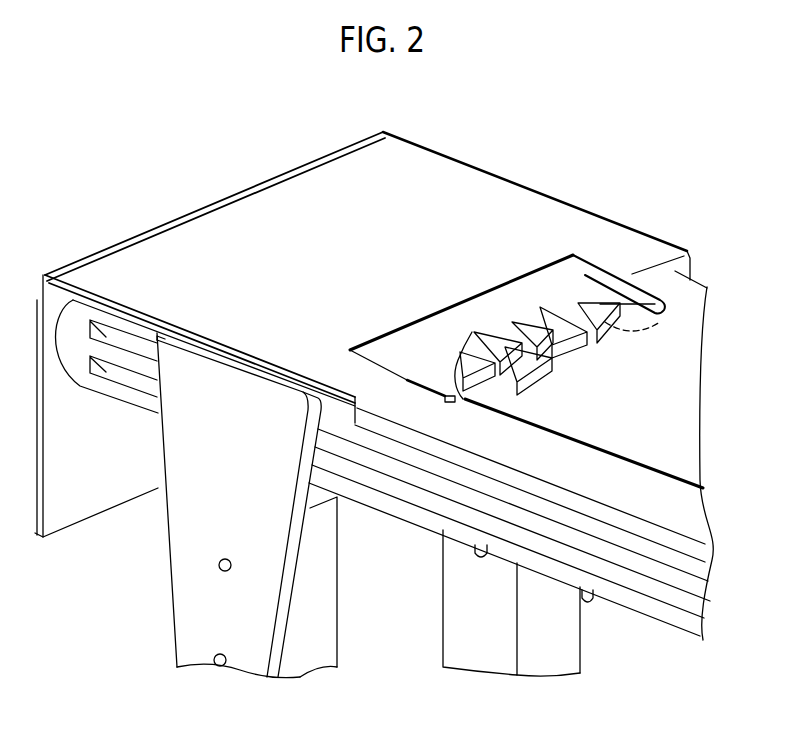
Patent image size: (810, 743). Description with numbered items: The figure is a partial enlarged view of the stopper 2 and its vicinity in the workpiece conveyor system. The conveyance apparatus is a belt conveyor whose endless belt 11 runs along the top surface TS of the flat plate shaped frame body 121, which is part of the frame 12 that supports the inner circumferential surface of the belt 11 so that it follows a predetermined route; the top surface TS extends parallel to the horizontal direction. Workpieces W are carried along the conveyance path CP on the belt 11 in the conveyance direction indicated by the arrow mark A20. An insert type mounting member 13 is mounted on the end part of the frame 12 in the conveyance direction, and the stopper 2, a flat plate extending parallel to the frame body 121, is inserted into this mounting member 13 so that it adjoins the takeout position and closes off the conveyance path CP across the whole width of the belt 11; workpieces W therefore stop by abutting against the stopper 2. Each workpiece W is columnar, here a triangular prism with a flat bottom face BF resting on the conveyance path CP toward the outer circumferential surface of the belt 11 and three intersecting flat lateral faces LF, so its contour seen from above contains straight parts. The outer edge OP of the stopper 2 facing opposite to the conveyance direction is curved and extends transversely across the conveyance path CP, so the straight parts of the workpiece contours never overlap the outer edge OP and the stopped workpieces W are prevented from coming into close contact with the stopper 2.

The stopper 2 is at (457, 330).
The belt 11 is at (677, 360).
The frame 12 is at (73, 343).
The frame body 121 is at (517, 483).
The mounting member 13 is at (305, 215).
The workpiece W is at (557, 327).
The lateral face LF is at (634, 283).
The bottom face BF is at (648, 326).
The arrow mark A20 is at (618, 379).
The conveyance path CP is at (613, 446).
The top surface TS is at (412, 409).
The outer edge OP is at (465, 400).